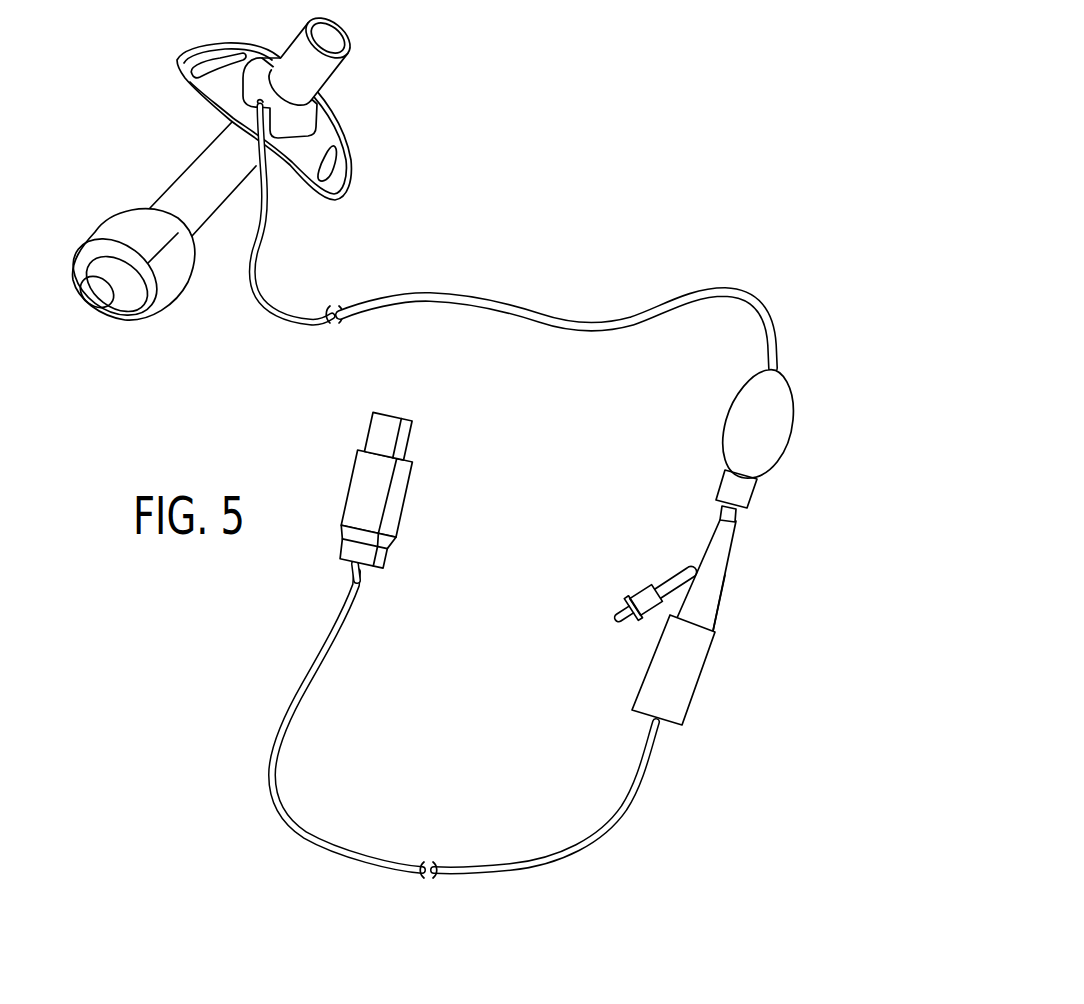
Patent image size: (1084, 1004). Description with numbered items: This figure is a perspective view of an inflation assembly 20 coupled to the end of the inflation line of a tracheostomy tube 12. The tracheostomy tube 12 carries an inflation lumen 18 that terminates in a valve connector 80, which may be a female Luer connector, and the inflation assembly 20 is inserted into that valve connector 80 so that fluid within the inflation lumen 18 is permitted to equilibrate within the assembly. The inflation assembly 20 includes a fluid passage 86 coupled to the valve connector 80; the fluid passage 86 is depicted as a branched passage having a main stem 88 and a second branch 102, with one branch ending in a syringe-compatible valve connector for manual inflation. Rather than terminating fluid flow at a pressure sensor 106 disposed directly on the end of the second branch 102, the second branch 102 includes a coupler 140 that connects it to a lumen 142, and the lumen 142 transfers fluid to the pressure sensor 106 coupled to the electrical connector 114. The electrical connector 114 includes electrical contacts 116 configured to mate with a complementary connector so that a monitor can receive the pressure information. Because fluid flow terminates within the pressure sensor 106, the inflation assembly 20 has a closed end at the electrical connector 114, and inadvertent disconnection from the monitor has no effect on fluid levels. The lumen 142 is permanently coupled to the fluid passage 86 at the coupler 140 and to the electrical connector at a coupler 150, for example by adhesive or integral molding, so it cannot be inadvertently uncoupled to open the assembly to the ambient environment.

The tracheostomy tube 12 is at (133, 117).
The inflation lumen 18 is at (716, 290).
The inflation assembly 20 is at (272, 657).
The valve connector 80 is at (718, 485).
The fluid passage 86 is at (733, 549).
The main stem 88 is at (706, 541).
The second branch 102 is at (712, 605).
The pressure sensor 106 is at (388, 546).
The electrical connector 114 is at (346, 483).
The electrical contacts 116 is at (395, 412).
The coupler 140 is at (716, 634).
The lumen 142 is at (646, 793).
The coupler 150 is at (380, 576).